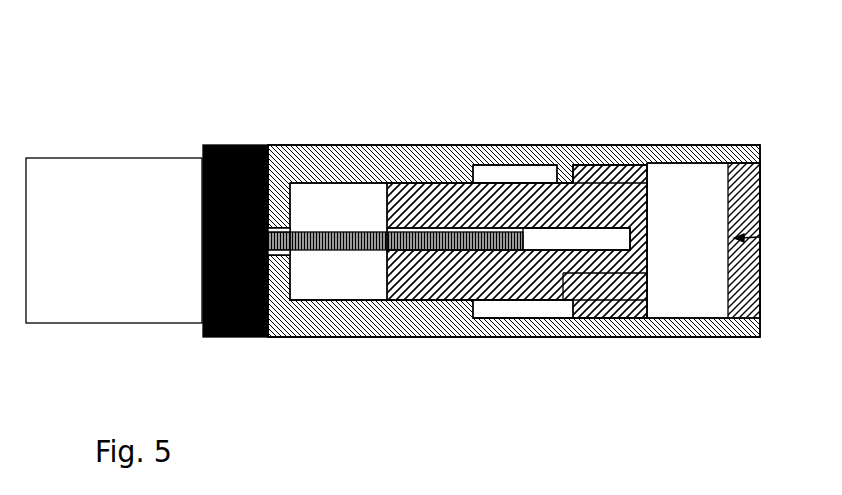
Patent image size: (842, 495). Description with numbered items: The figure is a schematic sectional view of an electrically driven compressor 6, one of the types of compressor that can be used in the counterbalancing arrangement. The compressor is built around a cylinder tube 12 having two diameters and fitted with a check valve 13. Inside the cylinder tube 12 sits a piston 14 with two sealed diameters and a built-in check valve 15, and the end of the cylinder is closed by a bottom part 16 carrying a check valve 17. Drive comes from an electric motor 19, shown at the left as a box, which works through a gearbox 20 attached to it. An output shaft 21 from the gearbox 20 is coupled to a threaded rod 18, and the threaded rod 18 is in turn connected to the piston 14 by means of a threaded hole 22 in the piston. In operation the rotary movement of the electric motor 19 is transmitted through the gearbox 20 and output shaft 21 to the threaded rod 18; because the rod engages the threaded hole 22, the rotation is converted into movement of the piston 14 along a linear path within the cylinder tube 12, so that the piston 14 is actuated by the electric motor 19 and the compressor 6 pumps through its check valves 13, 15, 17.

The compressor 6 is at (499, 113).
The cylinder tube 12 is at (430, 158).
The check valve 13 is at (472, 318).
The piston 14 is at (552, 210).
The check valve 15 is at (606, 263).
The bottom part 16 is at (748, 183).
The check valve 17 is at (760, 237).
The threaded rod 18 is at (316, 232).
The electric motor 19 is at (75, 185).
The gearbox 20 is at (227, 147).
The output shaft 21 is at (283, 258).
The threaded hole 22 is at (556, 245).